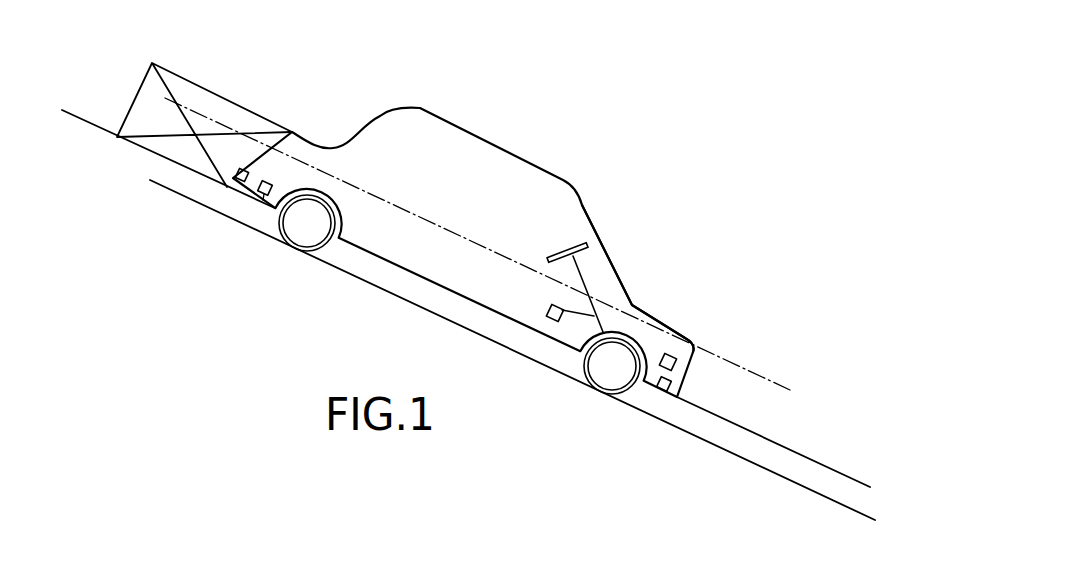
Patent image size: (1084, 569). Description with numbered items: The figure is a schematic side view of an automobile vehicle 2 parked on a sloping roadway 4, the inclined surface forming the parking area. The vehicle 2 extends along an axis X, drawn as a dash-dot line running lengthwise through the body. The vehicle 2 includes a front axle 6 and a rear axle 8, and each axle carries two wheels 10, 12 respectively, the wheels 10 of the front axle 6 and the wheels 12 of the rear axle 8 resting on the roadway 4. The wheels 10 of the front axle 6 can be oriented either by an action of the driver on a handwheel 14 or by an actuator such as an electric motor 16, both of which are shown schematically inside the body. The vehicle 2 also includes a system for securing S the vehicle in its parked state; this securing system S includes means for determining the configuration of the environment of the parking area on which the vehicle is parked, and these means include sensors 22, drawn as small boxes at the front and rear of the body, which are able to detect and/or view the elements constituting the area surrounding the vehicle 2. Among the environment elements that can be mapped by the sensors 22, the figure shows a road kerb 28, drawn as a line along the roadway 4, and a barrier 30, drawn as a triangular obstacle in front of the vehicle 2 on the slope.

The automobile vehicle 2 is at (657, 140).
The sloping roadway 4 is at (862, 512).
The front axle 6 is at (638, 301).
The rear axle 8 is at (330, 185).
The wheels of the front axle 10 is at (607, 376).
The wheels of the rear axle 12 is at (305, 235).
The handwheel 14 is at (580, 246).
The electric motor 16 is at (553, 318).
The sensors 22 is at (237, 180).
The road kerb 28 is at (807, 456).
The barrier 30 is at (230, 100).
The system for securing S is at (693, 350).
The axis X is at (782, 384).